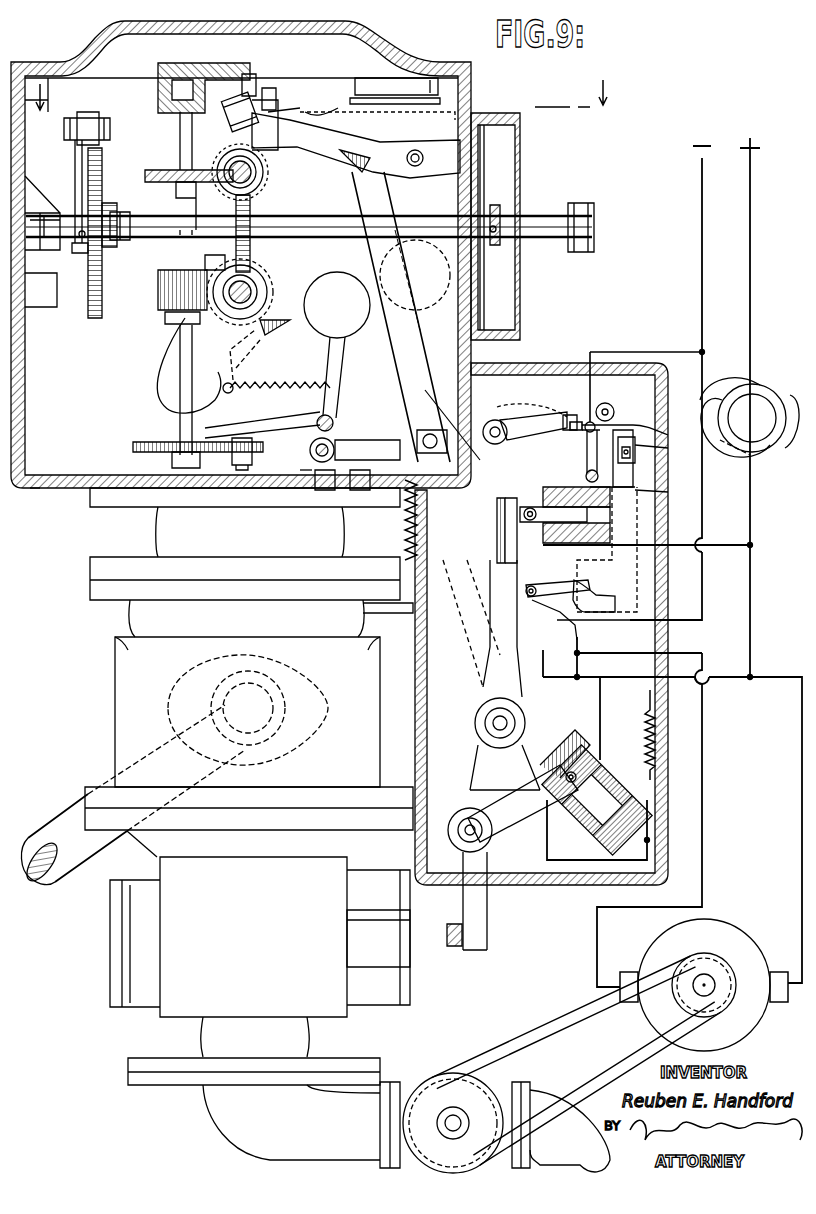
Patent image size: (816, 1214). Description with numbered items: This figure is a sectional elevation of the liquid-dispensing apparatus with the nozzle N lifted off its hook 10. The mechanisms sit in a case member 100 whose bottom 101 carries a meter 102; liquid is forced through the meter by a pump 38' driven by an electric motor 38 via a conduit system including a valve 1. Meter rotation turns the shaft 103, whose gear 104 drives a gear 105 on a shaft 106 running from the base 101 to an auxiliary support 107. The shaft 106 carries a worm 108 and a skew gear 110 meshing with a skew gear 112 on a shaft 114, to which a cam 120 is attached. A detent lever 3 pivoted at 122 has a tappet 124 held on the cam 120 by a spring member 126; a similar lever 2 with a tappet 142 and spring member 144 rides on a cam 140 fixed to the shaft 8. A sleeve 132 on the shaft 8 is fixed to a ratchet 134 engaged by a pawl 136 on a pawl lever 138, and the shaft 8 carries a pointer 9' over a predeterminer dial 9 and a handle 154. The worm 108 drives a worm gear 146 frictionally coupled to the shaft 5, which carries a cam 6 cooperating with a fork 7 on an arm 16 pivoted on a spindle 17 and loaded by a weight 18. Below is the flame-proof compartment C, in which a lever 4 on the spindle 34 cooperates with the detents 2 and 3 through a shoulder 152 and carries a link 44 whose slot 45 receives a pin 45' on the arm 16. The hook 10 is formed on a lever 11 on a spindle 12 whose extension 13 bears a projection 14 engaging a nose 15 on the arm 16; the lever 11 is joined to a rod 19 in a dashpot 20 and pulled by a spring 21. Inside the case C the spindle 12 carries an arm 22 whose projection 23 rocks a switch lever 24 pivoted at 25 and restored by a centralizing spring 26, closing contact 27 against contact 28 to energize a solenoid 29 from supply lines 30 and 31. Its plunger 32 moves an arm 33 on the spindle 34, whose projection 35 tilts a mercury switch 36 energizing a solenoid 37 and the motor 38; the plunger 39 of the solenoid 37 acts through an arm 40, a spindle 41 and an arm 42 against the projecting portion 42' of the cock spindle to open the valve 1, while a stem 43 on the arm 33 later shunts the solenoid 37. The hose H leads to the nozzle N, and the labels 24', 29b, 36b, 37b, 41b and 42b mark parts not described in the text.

The valve 1 is at (345, 970).
The lever 2 is at (374, 134).
The detent lever 3 is at (287, 112).
The lever 4 is at (378, 253).
The shaft 5 is at (252, 292).
The cam 6 is at (276, 284).
The forked member 7 is at (170, 340).
The shaft 8 is at (430, 226).
The dial 9 is at (511, 226).
The pointer 9' is at (523, 210).
The hook 10 is at (727, 506).
The lever 11 is at (560, 362).
The spindle 12 is at (495, 420).
The extended portion 13 is at (447, 430).
The projection 14 is at (355, 445).
The nose 15 is at (340, 418).
The arm 16 is at (225, 410).
The spindle 17 is at (300, 430).
The weight 18 is at (318, 322).
The rod 19 is at (634, 465).
The dashpot 20 is at (577, 563).
The spring 21 is at (403, 515).
The arm 22 is at (528, 428).
The projection 23 is at (562, 415).
The switch lever 24 is at (636, 391).
The contact roller 24' is at (618, 396).
The pivot 25 is at (586, 440).
The centralizing spring 26 is at (586, 470).
The electrical contact 27 is at (652, 436).
The contact 28 is at (656, 492).
The solenoid 29 is at (545, 495).
The conductor 29b is at (676, 548).
The supply line 30 is at (752, 250).
The supply line 31 is at (700, 246).
The plunger 32 is at (532, 524).
The arm 33 is at (500, 570).
The spindle 34 is at (485, 723).
The projection 35 is at (548, 612).
The mercury switch 36 is at (612, 595).
The conductor 36b is at (601, 692).
The solenoid 37 is at (612, 780).
The conductor 37b is at (660, 862).
The electric motor 38 is at (610, 1027).
The pump 38' is at (495, 1101).
The plunger 39 is at (590, 770).
The arm 40 is at (505, 820).
The spindle 41 is at (460, 815).
The conductor 41b is at (548, 678).
The arm 42 is at (498, 901).
The projecting portion 42' is at (465, 951).
The link 42b is at (478, 768).
The stem 43 is at (497, 500).
The link 44 is at (360, 470).
The elongated slot 45 is at (311, 507).
The pin 45' is at (297, 496).
The case member 100 is at (471, 68).
The bottom 101 is at (48, 490).
The meter 102 is at (130, 716).
The shaft 103 is at (225, 490).
The gear 104 is at (231, 445).
The gear 105 is at (146, 442).
The shaft 106 is at (178, 405).
The auxiliary support 107 is at (198, 100).
The worm 108 is at (158, 290).
The skew gear 110 is at (150, 170).
The skew gear 112 is at (265, 178).
The shaft 114 is at (233, 185).
The cam 120 is at (213, 135).
The pivot 122 is at (416, 150).
The adjustable tappet 124 is at (252, 88).
The spring member 126 is at (318, 96).
The sleeve 132 is at (140, 240).
The ratchet 134 is at (96, 172).
The pawl 136 is at (93, 116).
The pawl lever 138 is at (76, 157).
The cam 140 is at (253, 212).
The adjustable tappet 142 is at (280, 93).
The spring member 144 is at (372, 108).
The worm gear 146 is at (213, 263).
The shoulder 152 is at (342, 170).
The handle 154 is at (580, 253).
The auxiliary compartment C is at (666, 750).
The hose H is at (60, 830).
The nozzle N is at (762, 385).